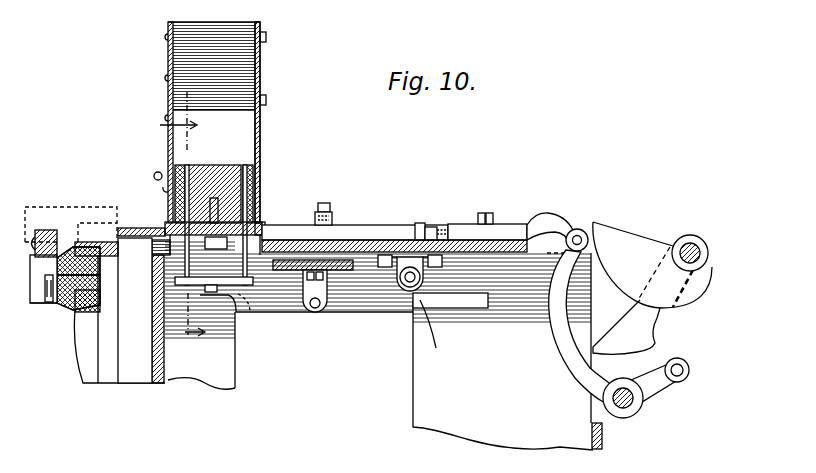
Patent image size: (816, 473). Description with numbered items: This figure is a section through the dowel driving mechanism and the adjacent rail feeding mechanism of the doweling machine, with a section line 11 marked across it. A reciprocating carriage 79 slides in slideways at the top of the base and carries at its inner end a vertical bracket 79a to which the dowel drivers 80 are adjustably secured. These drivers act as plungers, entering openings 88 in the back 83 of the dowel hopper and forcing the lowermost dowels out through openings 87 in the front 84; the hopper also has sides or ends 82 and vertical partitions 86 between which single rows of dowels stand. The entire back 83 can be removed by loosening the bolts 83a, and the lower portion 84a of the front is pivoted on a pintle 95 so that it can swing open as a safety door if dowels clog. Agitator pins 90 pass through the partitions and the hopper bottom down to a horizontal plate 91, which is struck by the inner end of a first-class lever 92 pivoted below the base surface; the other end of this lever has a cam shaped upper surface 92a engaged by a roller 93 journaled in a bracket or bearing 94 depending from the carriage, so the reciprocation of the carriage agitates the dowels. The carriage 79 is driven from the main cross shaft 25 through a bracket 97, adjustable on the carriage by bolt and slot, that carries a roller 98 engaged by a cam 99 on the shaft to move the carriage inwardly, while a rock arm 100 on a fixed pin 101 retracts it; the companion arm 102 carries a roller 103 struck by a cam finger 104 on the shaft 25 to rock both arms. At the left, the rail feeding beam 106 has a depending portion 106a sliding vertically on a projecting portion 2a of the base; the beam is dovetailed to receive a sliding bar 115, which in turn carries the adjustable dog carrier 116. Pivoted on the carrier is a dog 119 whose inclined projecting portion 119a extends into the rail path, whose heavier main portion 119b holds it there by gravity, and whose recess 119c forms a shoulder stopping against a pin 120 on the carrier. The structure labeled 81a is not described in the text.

The projecting portion of the base 2a is at (135, 368).
The section line 11 is at (182, 228).
The main cross shaft 25 is at (700, 250).
The reciprocating carriage 79 is at (367, 242).
The vertical bracket 79a is at (330, 220).
The dowel drivers 80 is at (284, 224).
The support block 81a is at (142, 240).
The sides or ends of the hopper 82 is at (248, 138).
The back of the hopper 83 is at (262, 96).
The bolts 83a is at (267, 100).
The front of the hopper 84 is at (168, 84).
The lower portion of the hopper front 84a is at (163, 190).
The vertical partitions 86 is at (222, 158).
The openings 87 is at (178, 228).
The openings 88 is at (261, 224).
The agitator pins 90 is at (240, 268).
The horizontal plate 91 is at (197, 283).
The lever 92 is at (297, 313).
The cam shaped upper surface 92a is at (432, 330).
The roller 93 is at (400, 283).
The bracket or bearing 94 is at (408, 290).
The pintle 95 is at (156, 173).
The bracket 97 is at (557, 221).
The roller 98 is at (586, 232).
The cam 99 is at (652, 265).
The rock arm 100 is at (568, 378).
The fixed pin 101 is at (624, 404).
The arm 102 is at (658, 385).
The roller 103 is at (690, 373).
The cam finger 104 is at (660, 346).
The plate or beam 106 is at (87, 267).
The depending portion of the beam 106a is at (88, 349).
The sliding bar 115 is at (68, 301).
The dog carrier 116 is at (72, 288).
The dogs 119 is at (62, 233).
The upwardly projecting and inclined portion 119a is at (43, 232).
The main portion 119b is at (46, 279).
The recess 119c is at (33, 308).
The pin 120 is at (50, 303).